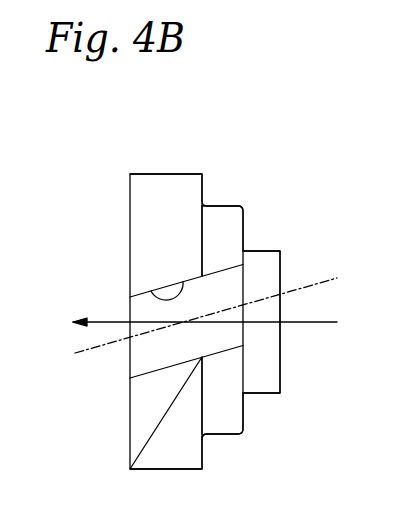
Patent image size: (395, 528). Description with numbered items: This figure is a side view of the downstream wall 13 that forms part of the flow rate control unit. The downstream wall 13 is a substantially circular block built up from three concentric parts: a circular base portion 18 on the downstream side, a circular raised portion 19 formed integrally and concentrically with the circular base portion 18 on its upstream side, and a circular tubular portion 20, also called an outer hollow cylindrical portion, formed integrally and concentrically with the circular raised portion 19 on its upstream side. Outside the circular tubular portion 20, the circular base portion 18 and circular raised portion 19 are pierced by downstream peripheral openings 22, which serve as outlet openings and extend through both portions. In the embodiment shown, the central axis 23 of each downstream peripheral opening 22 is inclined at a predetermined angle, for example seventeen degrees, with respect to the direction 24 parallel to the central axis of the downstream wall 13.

The downstream wall 13 is at (200, 155).
The circular base portion 18 is at (158, 174).
The circular raised portion 19 is at (225, 207).
The circular tubular portion 20 is at (266, 250).
The downstream peripheral opening 22 is at (151, 298).
The central axis of the downstream peripheral opening 23 is at (85, 354).
The direction parallel to the central axis 24 is at (102, 320).